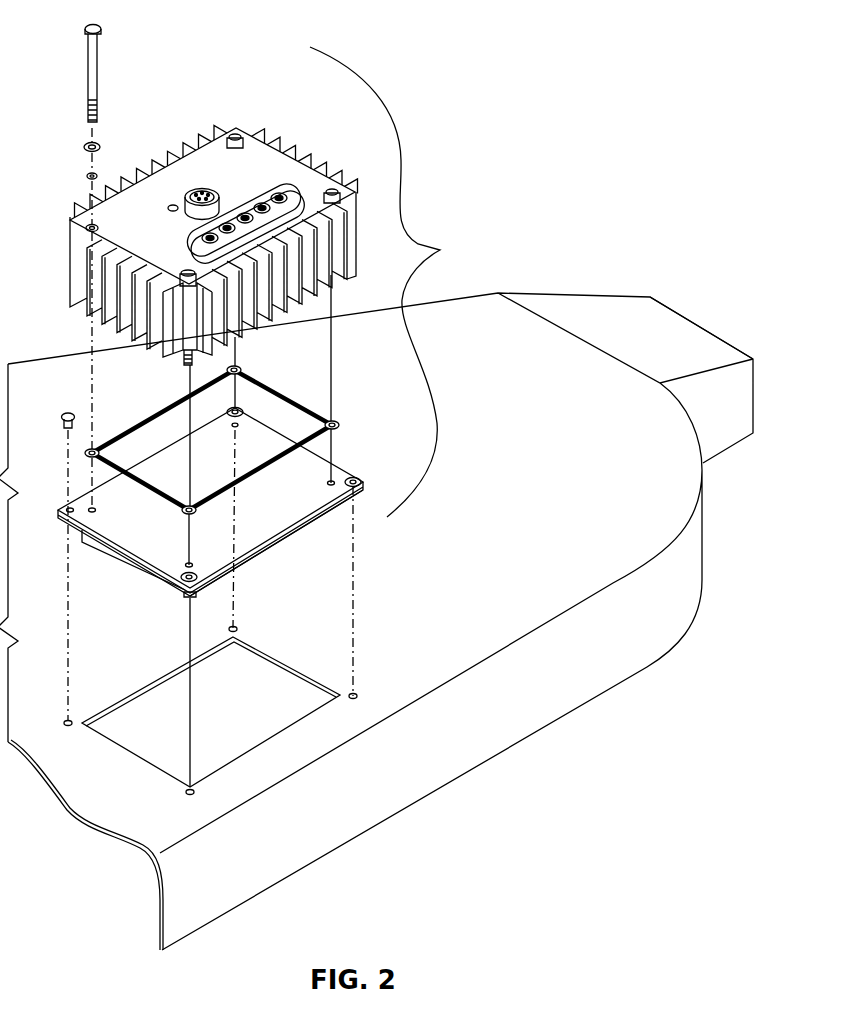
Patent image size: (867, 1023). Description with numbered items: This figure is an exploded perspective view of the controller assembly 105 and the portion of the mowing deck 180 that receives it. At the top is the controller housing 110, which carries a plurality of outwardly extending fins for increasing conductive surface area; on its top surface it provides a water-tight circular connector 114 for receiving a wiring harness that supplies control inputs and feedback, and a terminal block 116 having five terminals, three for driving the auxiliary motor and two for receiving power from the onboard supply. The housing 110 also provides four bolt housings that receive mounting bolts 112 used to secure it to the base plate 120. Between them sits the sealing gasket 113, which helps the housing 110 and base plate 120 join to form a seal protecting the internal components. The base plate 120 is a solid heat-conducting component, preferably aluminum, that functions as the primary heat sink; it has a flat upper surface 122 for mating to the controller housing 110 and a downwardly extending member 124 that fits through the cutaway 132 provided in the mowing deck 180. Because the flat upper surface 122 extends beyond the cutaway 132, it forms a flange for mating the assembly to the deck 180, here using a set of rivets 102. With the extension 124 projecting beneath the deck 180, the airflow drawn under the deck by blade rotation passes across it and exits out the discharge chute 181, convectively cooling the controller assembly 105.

The rivets 102 is at (62, 414).
The controller assembly 105 is at (440, 250).
The controller housing 110 is at (250, 163).
The mounting bolts 112 is at (88, 67).
The sealing gasket 113 is at (257, 375).
The circular connector 114 is at (193, 192).
The terminal block 116 is at (296, 194).
The base plate 120 is at (347, 463).
The flat upper surface 122 is at (277, 523).
The downwardly extending member 124 is at (301, 538).
The cutaway 132 is at (263, 650).
The mowing deck 180 is at (511, 496).
The discharge chute 181 is at (602, 298).